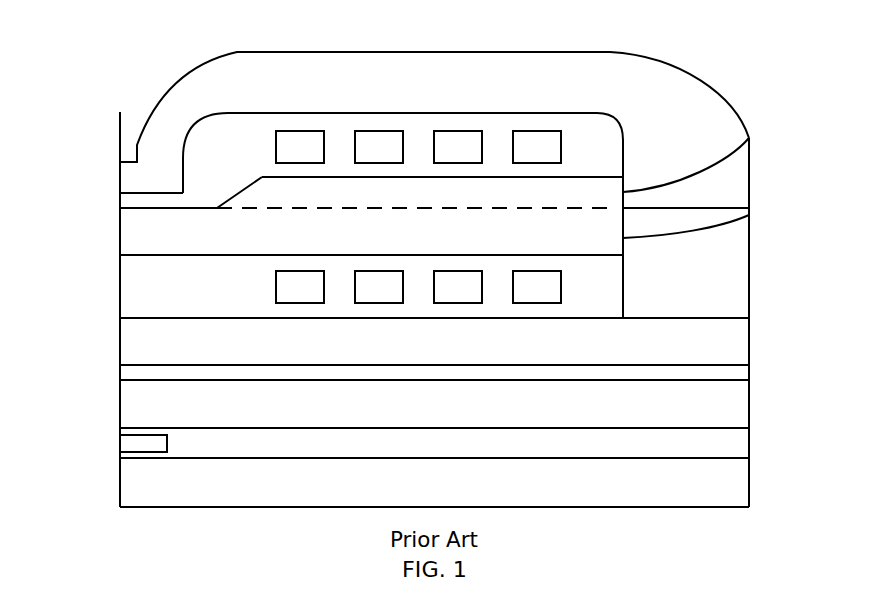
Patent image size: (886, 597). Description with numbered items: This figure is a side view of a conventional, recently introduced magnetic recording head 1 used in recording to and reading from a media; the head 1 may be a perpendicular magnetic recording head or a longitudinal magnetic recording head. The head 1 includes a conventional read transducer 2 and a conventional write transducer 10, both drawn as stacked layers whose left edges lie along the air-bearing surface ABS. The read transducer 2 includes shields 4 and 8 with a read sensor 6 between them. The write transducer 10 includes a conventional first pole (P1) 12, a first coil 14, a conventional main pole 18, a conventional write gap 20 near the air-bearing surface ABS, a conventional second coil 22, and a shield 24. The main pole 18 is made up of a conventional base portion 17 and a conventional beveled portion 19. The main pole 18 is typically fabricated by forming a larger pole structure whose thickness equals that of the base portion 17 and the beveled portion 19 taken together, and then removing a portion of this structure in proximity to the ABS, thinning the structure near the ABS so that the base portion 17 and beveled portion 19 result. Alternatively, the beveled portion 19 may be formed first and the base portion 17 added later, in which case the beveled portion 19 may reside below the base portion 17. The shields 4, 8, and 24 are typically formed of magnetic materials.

The magnetic recording head 1 is at (427, 31).
The read transducer 2 is at (780, 382).
The shield 4 is at (749, 490).
The read sensor 6 is at (118, 443).
The shield 8 is at (120, 412).
The write transducer 10 is at (780, 50).
The first pole (P1) 12 is at (120, 347).
The first coil 14 is at (244, 287).
The base portion 17 is at (749, 217).
The main pole 18 is at (82, 236).
The beveled portion 19 is at (749, 138).
The write gap 20 is at (120, 207).
The second coil 22 is at (243, 150).
The shield 24 is at (137, 144).
The air-bearing surface ABS is at (110, 529).